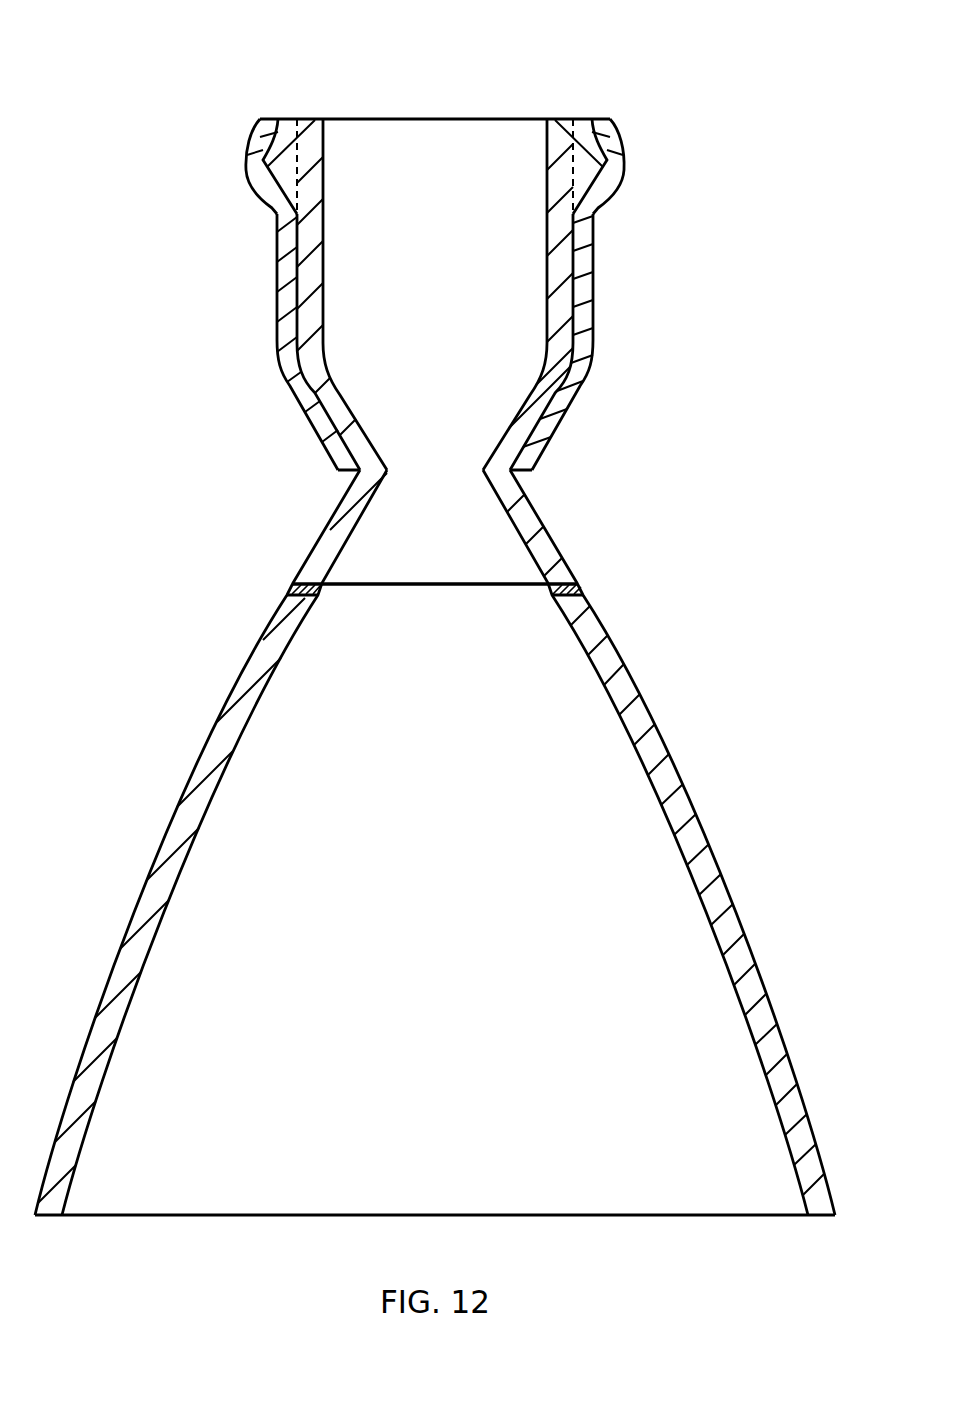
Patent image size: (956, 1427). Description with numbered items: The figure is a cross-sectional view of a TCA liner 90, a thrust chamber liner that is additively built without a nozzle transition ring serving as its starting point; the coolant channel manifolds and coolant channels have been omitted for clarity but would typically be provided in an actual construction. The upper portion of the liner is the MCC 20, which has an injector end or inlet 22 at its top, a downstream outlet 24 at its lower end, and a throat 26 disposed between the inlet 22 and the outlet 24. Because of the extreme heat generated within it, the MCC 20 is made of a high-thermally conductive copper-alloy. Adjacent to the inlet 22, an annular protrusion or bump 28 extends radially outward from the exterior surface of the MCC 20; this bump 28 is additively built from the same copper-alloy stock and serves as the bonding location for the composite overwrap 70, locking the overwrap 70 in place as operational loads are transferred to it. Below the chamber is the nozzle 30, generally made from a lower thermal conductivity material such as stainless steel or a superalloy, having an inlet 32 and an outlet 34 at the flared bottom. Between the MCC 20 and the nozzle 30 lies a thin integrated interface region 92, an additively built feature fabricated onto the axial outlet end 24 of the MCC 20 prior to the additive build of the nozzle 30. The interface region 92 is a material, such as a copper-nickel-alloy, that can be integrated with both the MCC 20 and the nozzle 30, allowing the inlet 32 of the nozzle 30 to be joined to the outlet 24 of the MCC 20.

The TCA liner 90 is at (130, 72).
The MCC 20 is at (332, 207).
The injector end or inlet 22 is at (455, 118).
The downstream outlet 24 is at (445, 583).
The throat 26 is at (512, 473).
The annular protrusion or bump 28 is at (282, 157).
The nozzle 30 is at (748, 828).
The inlet 32 is at (378, 586).
The outlet 34 is at (630, 1215).
The composite overwrap 70 is at (285, 313).
The integrated interface region 92 is at (298, 590).